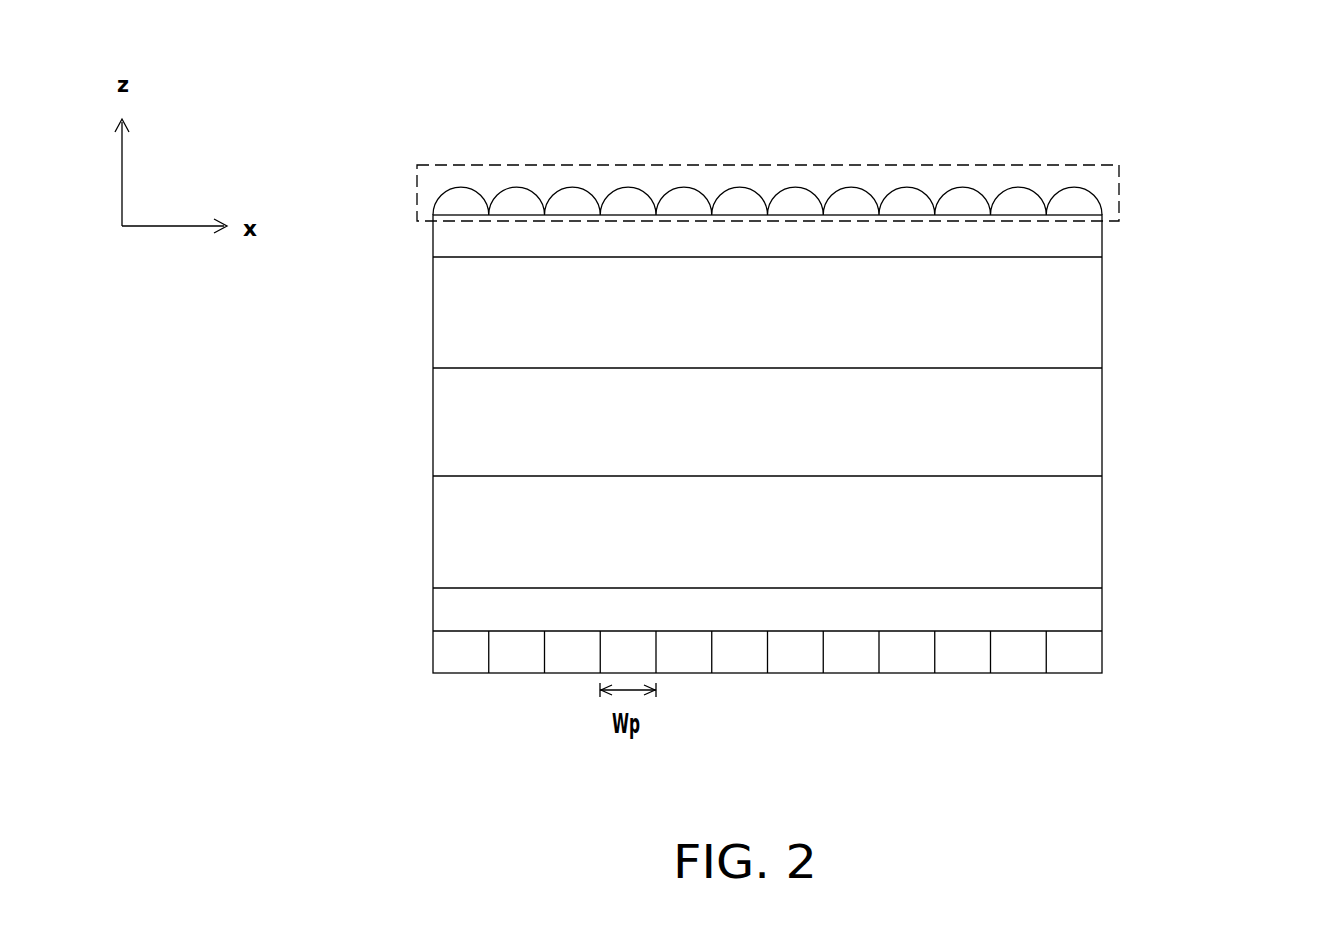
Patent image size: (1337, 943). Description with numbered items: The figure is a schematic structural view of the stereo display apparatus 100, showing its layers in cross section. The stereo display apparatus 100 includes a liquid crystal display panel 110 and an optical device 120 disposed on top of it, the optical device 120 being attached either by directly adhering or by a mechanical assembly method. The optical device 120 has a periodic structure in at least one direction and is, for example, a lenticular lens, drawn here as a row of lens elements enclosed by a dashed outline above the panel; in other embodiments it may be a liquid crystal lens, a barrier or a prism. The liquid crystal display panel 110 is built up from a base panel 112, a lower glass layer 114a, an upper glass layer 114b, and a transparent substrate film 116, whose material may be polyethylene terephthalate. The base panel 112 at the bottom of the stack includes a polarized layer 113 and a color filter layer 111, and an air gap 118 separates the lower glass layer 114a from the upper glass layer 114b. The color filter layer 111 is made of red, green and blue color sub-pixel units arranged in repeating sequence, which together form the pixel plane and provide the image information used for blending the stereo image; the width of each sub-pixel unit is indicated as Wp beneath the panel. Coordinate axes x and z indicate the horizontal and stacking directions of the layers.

The stereo display apparatus 100 is at (876, 496).
The liquid crystal display panel 110 is at (884, 445).
The color filter layer 111 is at (1102, 651).
The base panel 112 is at (850, 634).
The polarized layer 113 is at (1102, 607).
The lower glass layer 114a is at (1102, 529).
The upper glass layer 114b is at (1102, 313).
The transparent substrate film 116 is at (1102, 243).
The air gap 118 is at (1102, 424).
The optical device 120 is at (1119, 212).